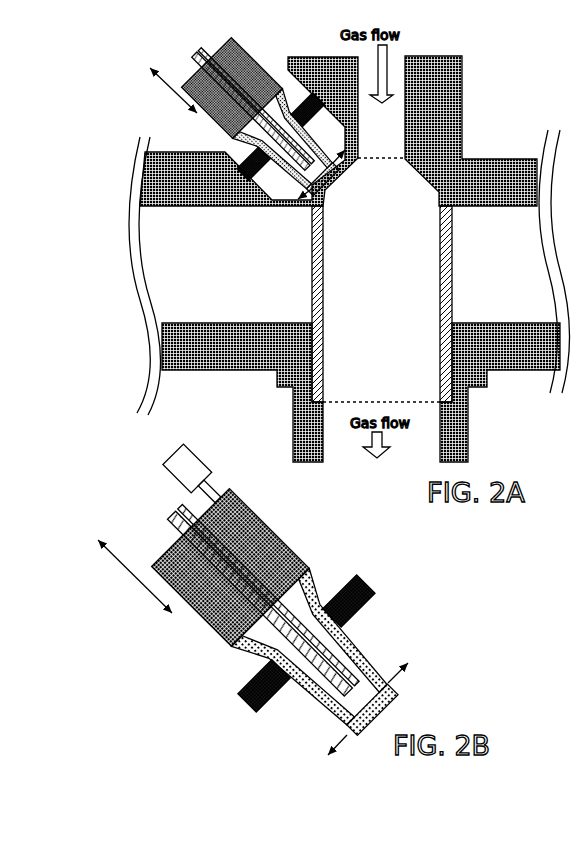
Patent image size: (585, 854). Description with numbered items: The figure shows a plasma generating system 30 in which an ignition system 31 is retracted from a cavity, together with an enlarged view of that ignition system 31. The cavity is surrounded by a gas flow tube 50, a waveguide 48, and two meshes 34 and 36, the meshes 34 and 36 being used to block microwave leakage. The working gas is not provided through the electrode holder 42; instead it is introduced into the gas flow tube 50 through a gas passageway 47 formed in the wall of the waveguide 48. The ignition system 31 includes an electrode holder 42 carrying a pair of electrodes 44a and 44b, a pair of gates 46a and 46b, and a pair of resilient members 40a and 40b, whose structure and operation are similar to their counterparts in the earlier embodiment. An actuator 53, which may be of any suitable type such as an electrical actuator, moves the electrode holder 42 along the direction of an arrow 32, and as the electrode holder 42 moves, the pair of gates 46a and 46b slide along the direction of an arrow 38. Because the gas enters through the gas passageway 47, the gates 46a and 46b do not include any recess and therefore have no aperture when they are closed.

In FIG. 2A, the plasma generating system 30 is at (90, 67).
In FIG. 2A, the ignition system 31 is at (190, 66).
In FIG. 2B, the ignition system 31 is at (256, 591).
In FIG. 2A, the arrow 32 is at (172, 91).
In FIG. 2B, the arrow 32 is at (127, 575).
In FIG. 2A, the mesh 34 is at (385, 160).
In FIG. 2A, the mesh 36 is at (387, 400).
In FIG. 2B, the arrow 38 is at (337, 740).
In FIG. 2B, the resilient member 40a is at (240, 682).
In FIG. 2B, the resilient member 40b is at (332, 597).
In FIG. 2B, the electrode holder 42 is at (208, 607).
In FIG. 2B, the electrode 44a is at (170, 522).
In FIG. 2B, the electrode 44b is at (180, 508).
In FIG. 2B, the gate 46a is at (300, 697).
In FIG. 2B, the gate 46b is at (360, 660).
In FIG. 2A, the gas passageway 47 is at (395, 62).
In FIG. 2A, the waveguide 48 is at (213, 207).
In FIG. 2A, the gas flow tube 50 is at (312, 265).
In FIG. 2B, the actuator 53 is at (192, 445).